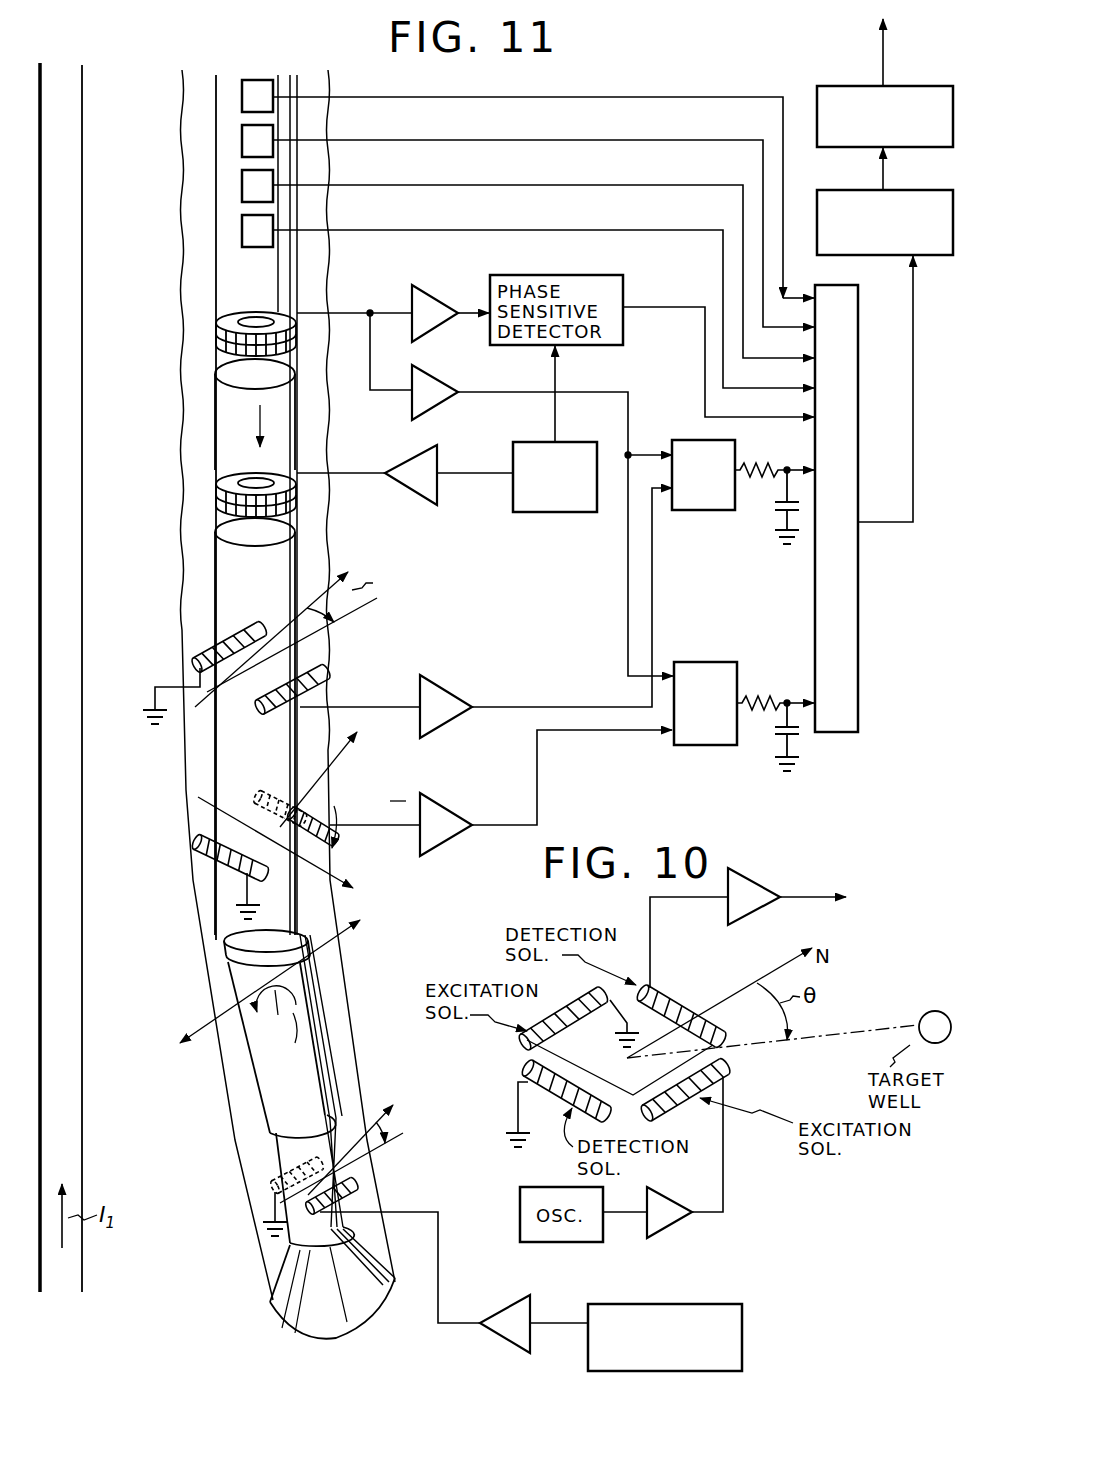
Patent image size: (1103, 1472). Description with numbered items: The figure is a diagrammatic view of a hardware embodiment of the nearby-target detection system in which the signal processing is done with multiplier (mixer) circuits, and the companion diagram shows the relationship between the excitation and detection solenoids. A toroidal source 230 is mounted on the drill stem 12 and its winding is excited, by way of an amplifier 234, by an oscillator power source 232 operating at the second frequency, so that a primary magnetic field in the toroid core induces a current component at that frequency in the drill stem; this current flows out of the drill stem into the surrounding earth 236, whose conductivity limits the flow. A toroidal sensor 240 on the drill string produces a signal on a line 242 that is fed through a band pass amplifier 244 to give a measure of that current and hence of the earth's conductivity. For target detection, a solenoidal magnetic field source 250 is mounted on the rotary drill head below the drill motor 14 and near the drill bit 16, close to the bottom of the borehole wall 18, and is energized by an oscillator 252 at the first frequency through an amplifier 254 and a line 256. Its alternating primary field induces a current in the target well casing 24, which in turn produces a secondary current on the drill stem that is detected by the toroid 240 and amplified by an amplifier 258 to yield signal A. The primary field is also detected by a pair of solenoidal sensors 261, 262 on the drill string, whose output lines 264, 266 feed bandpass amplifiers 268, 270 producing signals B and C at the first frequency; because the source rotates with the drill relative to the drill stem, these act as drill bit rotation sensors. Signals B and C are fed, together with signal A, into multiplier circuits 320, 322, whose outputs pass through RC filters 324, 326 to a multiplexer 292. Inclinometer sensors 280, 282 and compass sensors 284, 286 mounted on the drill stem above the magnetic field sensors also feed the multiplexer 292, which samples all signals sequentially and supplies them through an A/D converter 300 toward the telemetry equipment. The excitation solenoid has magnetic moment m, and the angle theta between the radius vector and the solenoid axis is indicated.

The drill stem 12 is at (216, 398).
The drill motor 14 is at (273, 1103).
The drill bit 16 is at (292, 1310).
The borehole wall 18 is at (186, 279).
The target well casing 24 is at (98, 614).
The toroidal source 230 is at (216, 497).
The oscillator f2 232 is at (555, 513).
The amplifier 234 is at (402, 458).
The surrounding earth 236 is at (150, 377).
The toroidal sensor 240 is at (216, 322).
The line 242 is at (360, 305).
The band pass amplifier 244 is at (446, 292).
The solenoidal magnetic field source 250 is at (262, 1183).
The oscillator 252 is at (742, 1333).
The amplifier 254 is at (508, 1330).
The line 256 is at (425, 1318).
The amplifier 258 is at (427, 370).
The solenoidal sensor 261 is at (213, 643).
The solenoidal sensor 262 is at (210, 866).
The output line 264 is at (383, 706).
The output line 266 is at (362, 824).
The bandpass amplifier 268 is at (440, 678).
The bandpass amplifier 270 is at (438, 803).
The inclinometer sensor 280 is at (242, 97).
The inclinometer sensor 282 is at (242, 140).
The compass sensor 284 is at (242, 185).
The compass sensor 286 is at (242, 230).
The multiplexer 292 is at (862, 653).
The A/D converter 300 is at (897, 254).
The multiplier circuit 320 is at (697, 440).
The multiplier circuit 322 is at (707, 747).
The RC filter 324 is at (787, 460).
The RC filter 326 is at (808, 752).